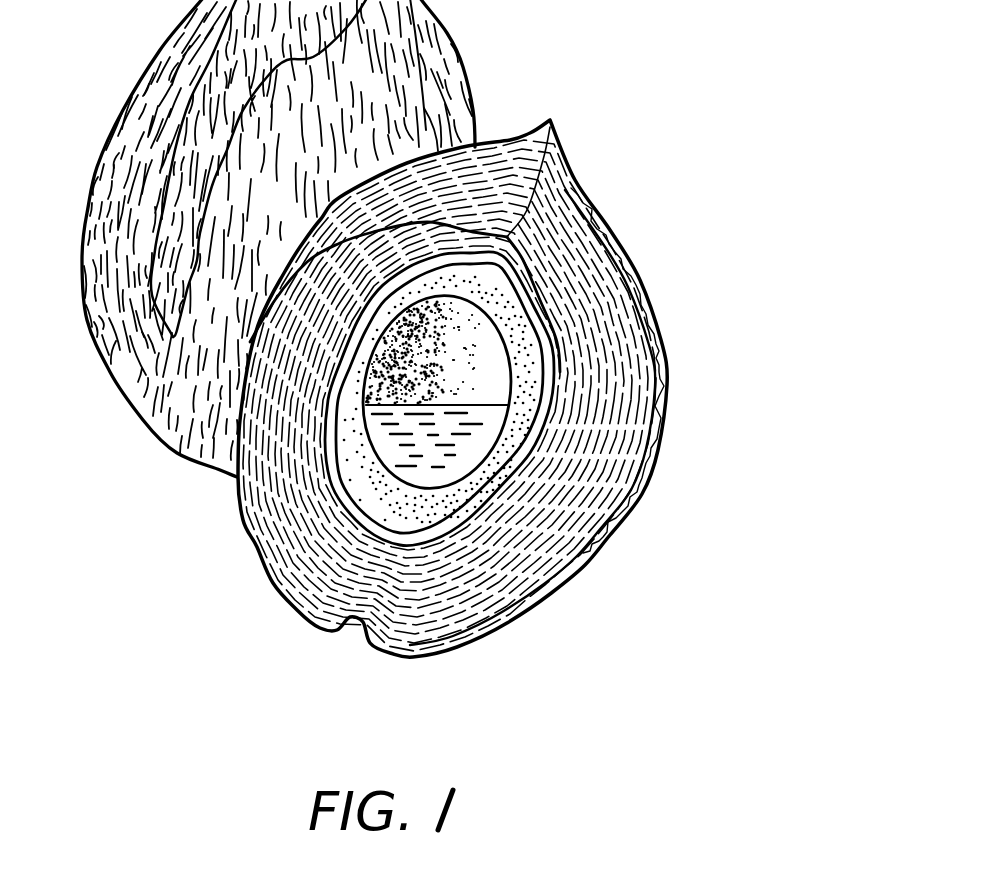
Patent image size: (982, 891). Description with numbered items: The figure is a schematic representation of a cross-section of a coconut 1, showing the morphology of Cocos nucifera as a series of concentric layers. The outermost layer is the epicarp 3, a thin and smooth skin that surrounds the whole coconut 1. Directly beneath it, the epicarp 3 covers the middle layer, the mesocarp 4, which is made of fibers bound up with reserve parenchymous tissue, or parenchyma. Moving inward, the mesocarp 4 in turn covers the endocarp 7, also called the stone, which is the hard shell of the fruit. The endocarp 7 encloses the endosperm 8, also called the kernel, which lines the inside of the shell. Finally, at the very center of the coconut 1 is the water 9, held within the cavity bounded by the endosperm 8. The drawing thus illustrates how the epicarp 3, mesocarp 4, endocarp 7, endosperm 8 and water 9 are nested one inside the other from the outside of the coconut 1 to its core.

The coconut 1 is at (693, 197).
The epicarp 3 is at (605, 458).
The mesocarp 4 is at (590, 416).
The endocarp 7 is at (537, 300).
The endosperm 8 is at (447, 483).
The water 9 is at (408, 437).